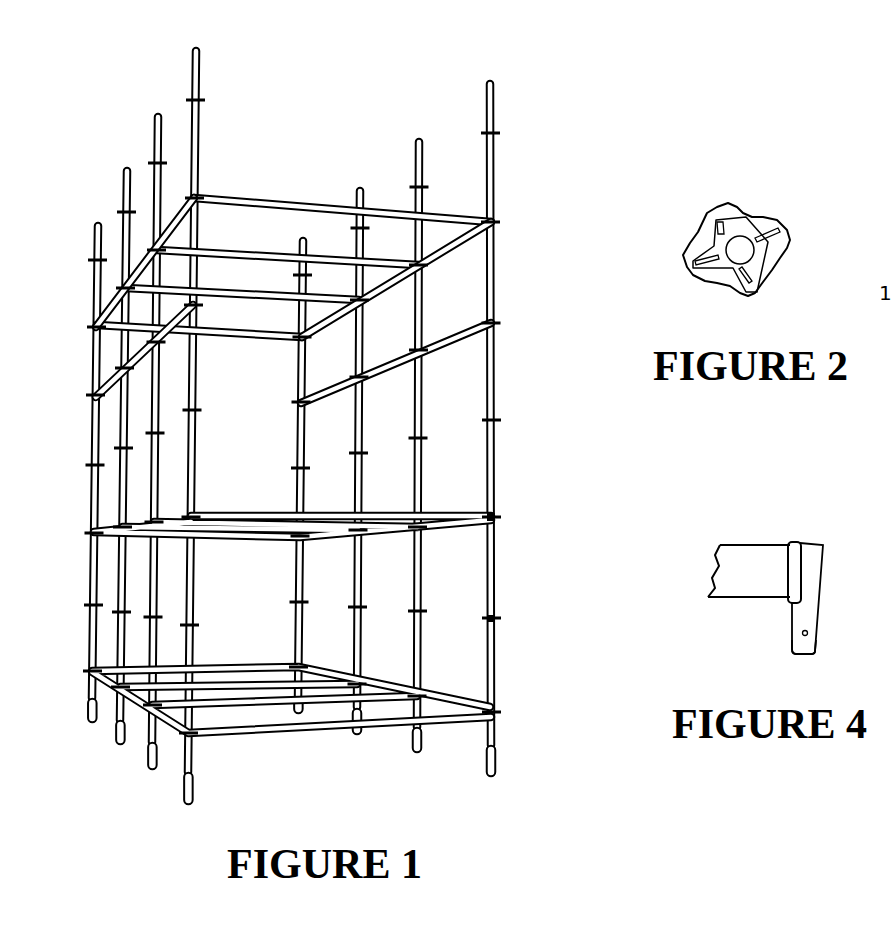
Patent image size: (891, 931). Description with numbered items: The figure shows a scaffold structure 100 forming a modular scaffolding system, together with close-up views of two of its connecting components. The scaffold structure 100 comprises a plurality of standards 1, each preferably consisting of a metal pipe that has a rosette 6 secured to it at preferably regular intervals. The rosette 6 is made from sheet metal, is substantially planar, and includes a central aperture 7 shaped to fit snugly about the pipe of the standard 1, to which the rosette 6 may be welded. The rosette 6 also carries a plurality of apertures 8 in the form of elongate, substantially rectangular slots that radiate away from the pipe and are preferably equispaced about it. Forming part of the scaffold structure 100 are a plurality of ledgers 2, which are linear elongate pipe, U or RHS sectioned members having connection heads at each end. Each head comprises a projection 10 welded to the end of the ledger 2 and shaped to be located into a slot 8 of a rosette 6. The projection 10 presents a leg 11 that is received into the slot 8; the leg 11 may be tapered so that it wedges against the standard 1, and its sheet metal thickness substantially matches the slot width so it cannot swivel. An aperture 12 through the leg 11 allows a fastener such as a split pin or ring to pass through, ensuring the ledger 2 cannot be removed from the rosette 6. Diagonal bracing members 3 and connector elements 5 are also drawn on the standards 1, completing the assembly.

In FIG. 1, the scaffold structure 100 is at (342, 414).
In FIG. 1, the standard 1 is at (200, 146).
In FIG. 1, the ledger 2 is at (465, 702).
In FIG. 4, the ledger 2 is at (758, 553).
In FIG. 1, the diagonal brace 3 is at (467, 330).
In FIG. 1, the rosette connector on standard 5 is at (500, 420).
In FIG. 1, the rosette 6 is at (497, 517).
In FIG. 2, the rosette 6 is at (752, 222).
In FIG. 2, the central aperture 7 is at (733, 250).
In FIG. 2, the apertures 8 is at (757, 286).
In FIG. 4, the projection 10 is at (810, 607).
In FIG. 4, the leg 11 is at (813, 642).
In FIG. 4, the aperture 12 is at (802, 633).